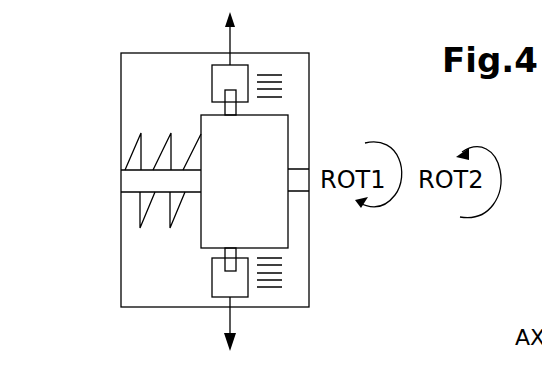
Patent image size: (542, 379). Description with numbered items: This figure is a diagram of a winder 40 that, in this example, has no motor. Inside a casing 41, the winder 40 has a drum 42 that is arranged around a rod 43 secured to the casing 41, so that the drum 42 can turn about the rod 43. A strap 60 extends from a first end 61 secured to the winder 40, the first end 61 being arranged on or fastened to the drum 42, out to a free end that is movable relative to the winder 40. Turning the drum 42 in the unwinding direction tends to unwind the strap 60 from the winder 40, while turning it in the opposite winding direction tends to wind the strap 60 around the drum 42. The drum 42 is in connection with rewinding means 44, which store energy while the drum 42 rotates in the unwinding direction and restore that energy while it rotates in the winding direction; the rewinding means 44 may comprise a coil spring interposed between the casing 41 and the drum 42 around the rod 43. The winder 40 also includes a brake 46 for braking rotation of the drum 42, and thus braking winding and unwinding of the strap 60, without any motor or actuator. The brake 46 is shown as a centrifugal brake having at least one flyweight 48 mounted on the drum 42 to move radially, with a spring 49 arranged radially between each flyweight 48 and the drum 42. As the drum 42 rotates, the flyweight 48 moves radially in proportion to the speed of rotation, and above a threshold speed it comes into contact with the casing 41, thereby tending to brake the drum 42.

The winder 40 is at (103, 258).
The casing 41 is at (121, 83).
The drum 42 is at (288, 123).
The rod 43 is at (128, 180).
The rewinding means 44 is at (122, 155).
The brake 46 is at (195, 270).
The flyweight 48 is at (212, 75).
The spring 49 is at (218, 107).
The strap 60 is at (294, 283).
The first end 61 is at (288, 248).